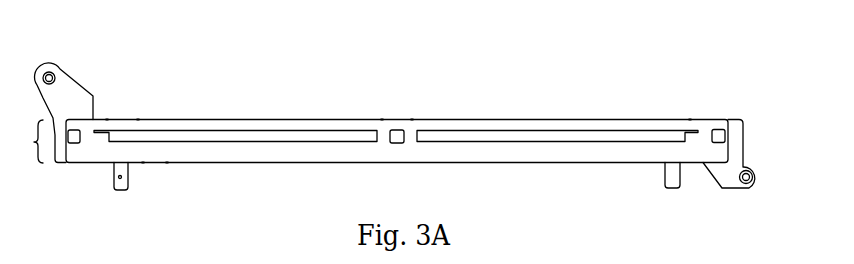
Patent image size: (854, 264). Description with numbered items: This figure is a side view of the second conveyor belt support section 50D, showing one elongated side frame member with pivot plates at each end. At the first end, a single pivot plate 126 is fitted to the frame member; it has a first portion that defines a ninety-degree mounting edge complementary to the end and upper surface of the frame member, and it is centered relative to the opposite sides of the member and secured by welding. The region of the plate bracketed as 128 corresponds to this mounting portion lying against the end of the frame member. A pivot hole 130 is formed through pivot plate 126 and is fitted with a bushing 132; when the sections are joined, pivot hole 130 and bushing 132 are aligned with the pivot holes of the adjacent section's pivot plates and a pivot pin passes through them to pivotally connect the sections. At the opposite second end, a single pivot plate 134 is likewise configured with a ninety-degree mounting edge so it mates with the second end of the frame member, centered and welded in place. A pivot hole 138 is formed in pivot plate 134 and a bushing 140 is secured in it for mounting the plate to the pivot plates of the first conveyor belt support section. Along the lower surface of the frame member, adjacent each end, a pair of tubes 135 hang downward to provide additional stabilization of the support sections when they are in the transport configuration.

The conveyor belt support section 50D is at (451, 84).
The pivot plate 126 is at (82, 92).
The mounting portion 128 is at (30, 141).
The pivot hole 130 is at (45, 72).
The bushing 132 is at (56, 76).
The pivot plate 134 is at (738, 138).
The tubes 135 is at (128, 183).
The pivot hole 138 is at (747, 184).
The bushing 140 is at (753, 169).